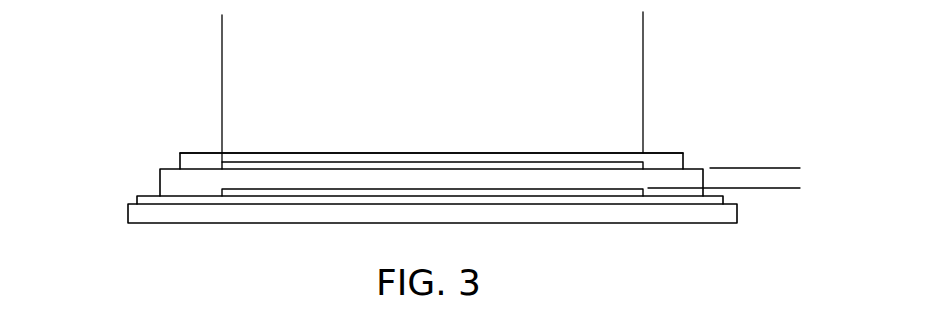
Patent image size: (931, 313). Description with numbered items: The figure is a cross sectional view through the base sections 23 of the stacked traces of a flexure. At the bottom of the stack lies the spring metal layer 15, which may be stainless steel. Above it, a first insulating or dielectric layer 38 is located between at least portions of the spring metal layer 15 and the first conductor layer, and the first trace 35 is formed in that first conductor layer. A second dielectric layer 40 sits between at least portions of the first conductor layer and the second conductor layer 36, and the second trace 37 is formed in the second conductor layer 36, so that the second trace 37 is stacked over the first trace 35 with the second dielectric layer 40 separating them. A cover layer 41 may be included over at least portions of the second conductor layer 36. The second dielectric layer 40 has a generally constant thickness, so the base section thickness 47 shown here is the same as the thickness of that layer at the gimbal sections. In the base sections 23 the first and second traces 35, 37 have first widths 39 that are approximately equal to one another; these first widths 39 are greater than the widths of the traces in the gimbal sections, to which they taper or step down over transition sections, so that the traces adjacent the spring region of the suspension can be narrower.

The spring metal layer 15 is at (737, 209).
The first dielectric layer 38 is at (147, 196).
The second dielectric layer 40 is at (170, 169).
The cover layer 41 is at (187, 152).
The second conductor layer 36 is at (647, 164).
The second trace 37 is at (313, 162).
The first trace 35 is at (567, 188).
The first width 39 is at (640, 37).
The base section thickness 47 is at (795, 203).
The base section 23 is at (660, 134).